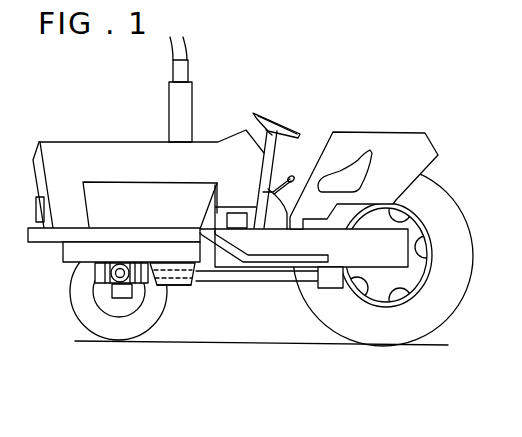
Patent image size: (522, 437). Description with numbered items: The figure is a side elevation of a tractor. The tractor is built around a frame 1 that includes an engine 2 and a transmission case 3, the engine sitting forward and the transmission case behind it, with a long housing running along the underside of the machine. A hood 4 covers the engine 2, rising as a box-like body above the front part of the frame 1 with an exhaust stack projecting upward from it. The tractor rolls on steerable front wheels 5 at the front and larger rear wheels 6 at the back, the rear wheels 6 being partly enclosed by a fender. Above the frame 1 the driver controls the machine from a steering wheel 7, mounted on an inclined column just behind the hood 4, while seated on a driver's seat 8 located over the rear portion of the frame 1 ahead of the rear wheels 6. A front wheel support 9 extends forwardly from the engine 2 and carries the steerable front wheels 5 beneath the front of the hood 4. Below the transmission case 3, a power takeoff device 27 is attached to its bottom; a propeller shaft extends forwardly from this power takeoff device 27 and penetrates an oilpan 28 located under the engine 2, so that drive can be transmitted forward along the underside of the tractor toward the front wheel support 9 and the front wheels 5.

The frame 1 is at (247, 282).
The engine 2 is at (177, 288).
The transmission case 3 is at (400, 242).
The hood 4 is at (110, 153).
The steerable front wheels 5 is at (113, 333).
The rear wheels 6 is at (405, 327).
The steering wheel 7 is at (280, 122).
The driver's seat 8 is at (357, 163).
The front wheel support 9 is at (70, 248).
The power takeoff device 27 is at (333, 288).
The oilpan 28 is at (174, 286).